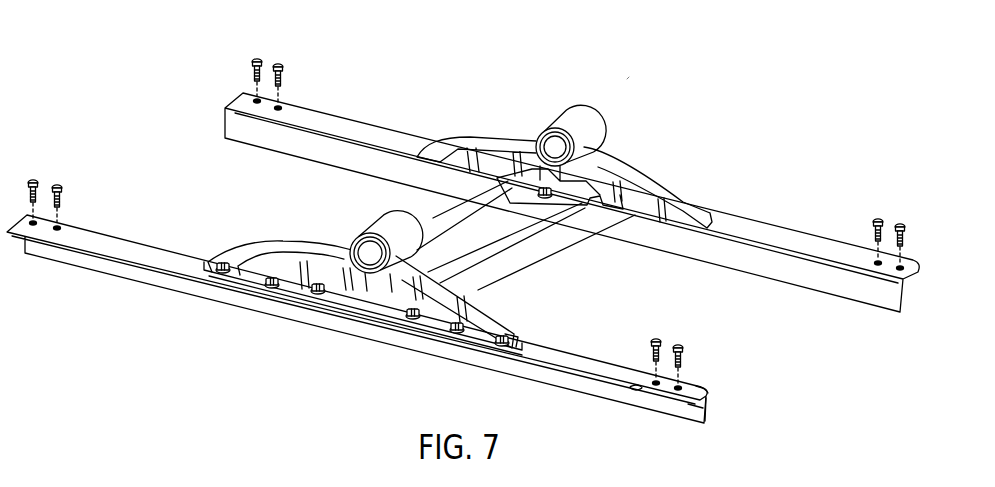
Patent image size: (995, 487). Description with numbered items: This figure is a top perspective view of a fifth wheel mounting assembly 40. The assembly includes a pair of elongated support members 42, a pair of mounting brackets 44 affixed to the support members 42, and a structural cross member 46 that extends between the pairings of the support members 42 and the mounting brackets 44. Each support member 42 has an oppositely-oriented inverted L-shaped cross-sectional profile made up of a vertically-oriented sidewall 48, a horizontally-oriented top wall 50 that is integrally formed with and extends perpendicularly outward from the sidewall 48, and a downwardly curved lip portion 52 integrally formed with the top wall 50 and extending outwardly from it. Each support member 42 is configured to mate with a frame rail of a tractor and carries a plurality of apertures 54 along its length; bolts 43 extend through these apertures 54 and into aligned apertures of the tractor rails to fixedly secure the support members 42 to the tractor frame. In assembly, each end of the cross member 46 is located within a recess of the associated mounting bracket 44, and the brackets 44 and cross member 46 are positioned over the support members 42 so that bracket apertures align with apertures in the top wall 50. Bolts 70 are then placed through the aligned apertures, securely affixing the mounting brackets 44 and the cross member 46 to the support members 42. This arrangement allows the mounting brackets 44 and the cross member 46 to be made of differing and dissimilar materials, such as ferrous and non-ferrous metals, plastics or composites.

The fifth wheel mounting assembly 40 is at (630, 76).
The support member 42 is at (790, 226).
The bolt 43 is at (278, 58).
The mounting bracket 44 is at (564, 105).
The structural cross member 46 is at (428, 218).
The sidewall 48 is at (707, 408).
The top wall 50 is at (683, 383).
The lip portion 52 is at (693, 421).
The aperture 54 is at (638, 391).
The bolt 70 is at (511, 331).